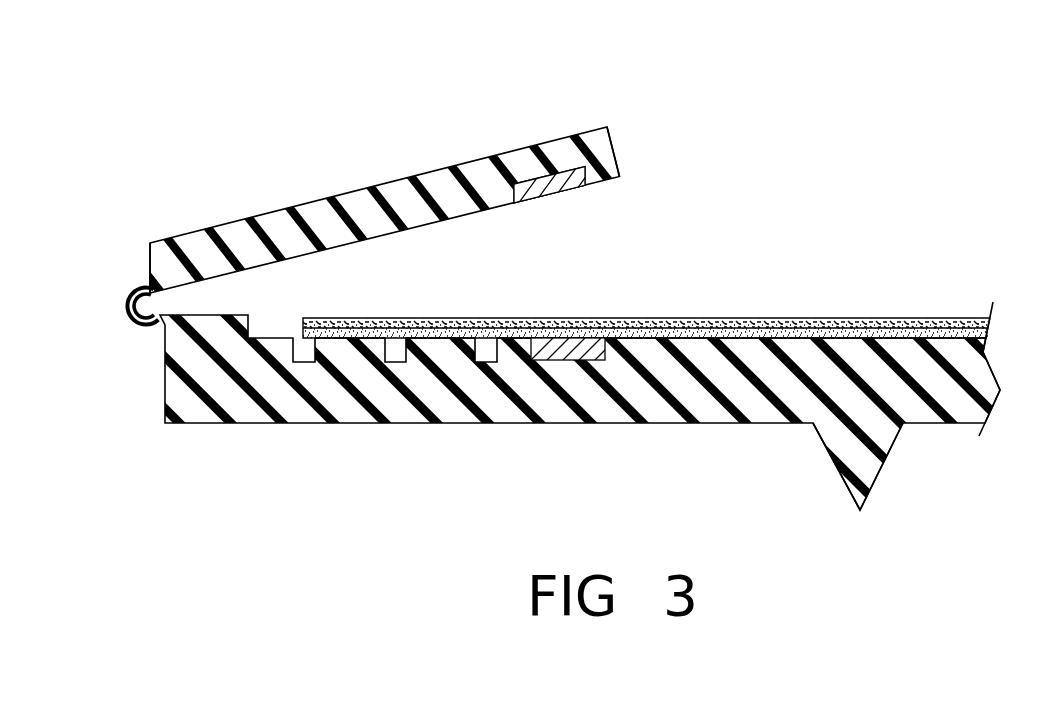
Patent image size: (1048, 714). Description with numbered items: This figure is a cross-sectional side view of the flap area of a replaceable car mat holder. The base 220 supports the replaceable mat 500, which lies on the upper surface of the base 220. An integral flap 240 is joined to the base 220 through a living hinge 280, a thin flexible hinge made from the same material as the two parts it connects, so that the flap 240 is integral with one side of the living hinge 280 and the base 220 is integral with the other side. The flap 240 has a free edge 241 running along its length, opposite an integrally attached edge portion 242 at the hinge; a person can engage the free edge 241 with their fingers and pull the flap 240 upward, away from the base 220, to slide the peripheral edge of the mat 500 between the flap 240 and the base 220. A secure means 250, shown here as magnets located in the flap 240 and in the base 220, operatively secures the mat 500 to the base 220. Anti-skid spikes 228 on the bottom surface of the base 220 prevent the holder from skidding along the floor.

The base 220 is at (638, 392).
The anti-skid spikes 228 is at (881, 467).
The flap 240 is at (380, 183).
The free edge 241 is at (612, 147).
The integrally attached edge portion 242 is at (150, 265).
The secure means 250 is at (543, 338).
The living hinge 280 is at (134, 321).
The replaceable mat 500 is at (783, 318).